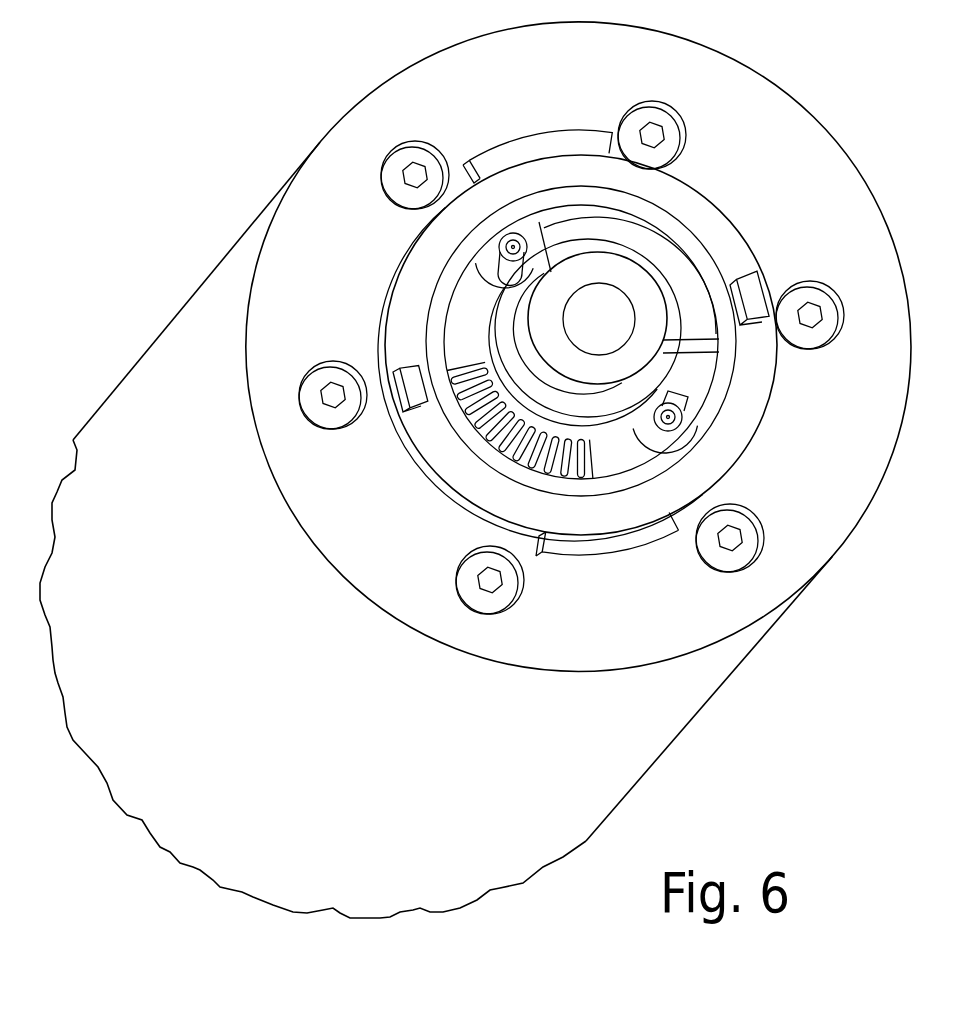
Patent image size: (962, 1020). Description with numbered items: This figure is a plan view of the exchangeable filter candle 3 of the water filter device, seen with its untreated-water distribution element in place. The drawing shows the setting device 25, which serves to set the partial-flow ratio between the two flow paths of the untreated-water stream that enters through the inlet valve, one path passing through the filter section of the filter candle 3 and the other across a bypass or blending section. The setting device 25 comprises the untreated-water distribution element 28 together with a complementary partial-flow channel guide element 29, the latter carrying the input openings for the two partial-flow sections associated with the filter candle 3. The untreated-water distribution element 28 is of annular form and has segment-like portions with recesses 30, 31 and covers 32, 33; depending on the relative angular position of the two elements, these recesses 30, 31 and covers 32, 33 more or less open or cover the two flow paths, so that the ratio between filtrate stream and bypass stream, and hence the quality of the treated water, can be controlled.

The exchangeable filter candle 3 is at (116, 306).
The setting device 25 is at (354, 276).
The untreated-water distribution element 28 is at (561, 198).
The partial-flow channel guide element 29 is at (482, 455).
The recess 30 is at (660, 267).
The recess 31 is at (553, 465).
The cover 32 is at (695, 375).
The cover 33 is at (463, 325).